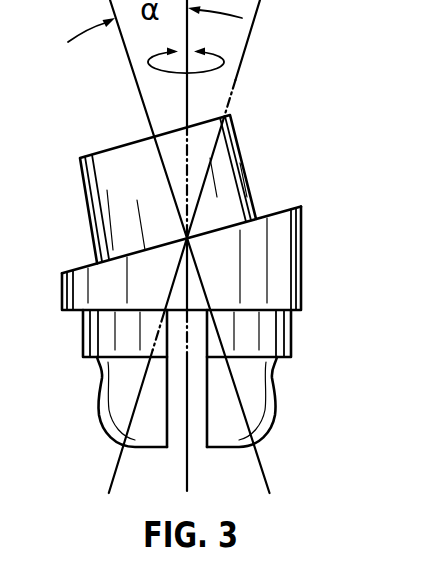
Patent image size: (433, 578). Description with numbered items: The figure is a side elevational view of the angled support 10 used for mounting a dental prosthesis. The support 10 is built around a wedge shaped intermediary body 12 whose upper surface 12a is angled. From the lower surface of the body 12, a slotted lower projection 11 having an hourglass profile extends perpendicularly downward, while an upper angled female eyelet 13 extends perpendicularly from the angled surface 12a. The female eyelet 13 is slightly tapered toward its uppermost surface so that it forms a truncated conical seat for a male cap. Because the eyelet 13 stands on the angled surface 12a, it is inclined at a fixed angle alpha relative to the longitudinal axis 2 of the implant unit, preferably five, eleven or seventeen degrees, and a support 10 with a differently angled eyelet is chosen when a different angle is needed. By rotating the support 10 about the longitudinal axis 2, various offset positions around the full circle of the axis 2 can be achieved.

The longitudinal axis 2 is at (187, 96).
The support 10 is at (283, 109).
The slotted lower projection 11 is at (273, 380).
The intermediary body 12 is at (185, 252).
The angled upper surface 12a is at (86, 264).
The female eyelet 13 is at (258, 175).